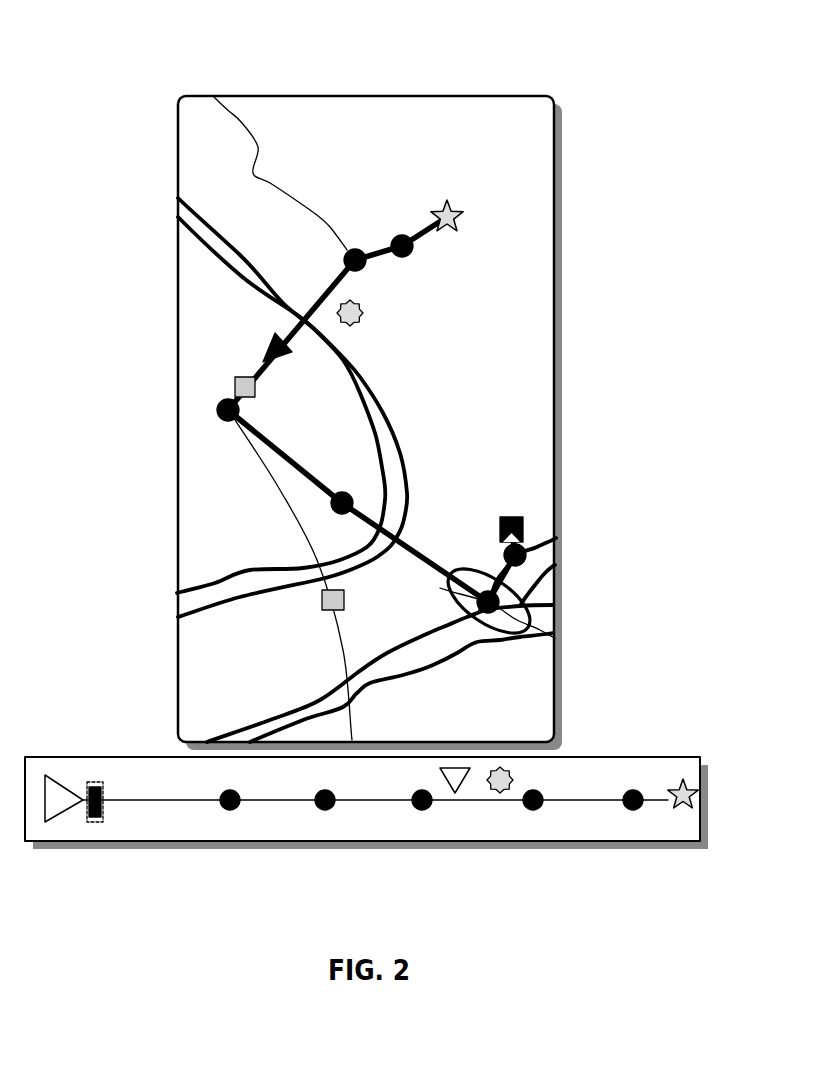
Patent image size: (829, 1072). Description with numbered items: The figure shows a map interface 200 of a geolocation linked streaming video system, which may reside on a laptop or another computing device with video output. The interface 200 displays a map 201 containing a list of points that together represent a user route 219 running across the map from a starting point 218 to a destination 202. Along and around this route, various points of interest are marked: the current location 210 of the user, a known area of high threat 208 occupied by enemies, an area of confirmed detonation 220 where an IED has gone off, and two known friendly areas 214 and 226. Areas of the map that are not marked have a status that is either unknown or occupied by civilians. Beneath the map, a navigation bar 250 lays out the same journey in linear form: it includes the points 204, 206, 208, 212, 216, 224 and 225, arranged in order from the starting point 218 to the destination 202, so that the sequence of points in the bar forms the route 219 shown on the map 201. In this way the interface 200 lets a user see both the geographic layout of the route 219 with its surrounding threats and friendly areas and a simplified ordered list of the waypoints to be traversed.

The map interface 200 is at (588, 88).
The map 201 is at (439, 128).
The destination 202 is at (462, 205).
The point 204 is at (402, 236).
The point 206 is at (346, 258).
The known area of high threat 208 is at (366, 310).
The current location 210 is at (266, 343).
The point 212 is at (227, 400).
The known friendly area 214 is at (255, 390).
The point 216 is at (345, 494).
The starting point 218 is at (508, 517).
The user route 219 is at (414, 547).
The area of confirmed detonation 220 is at (556, 561).
The point 224 is at (462, 603).
The point 225 is at (554, 545).
The known friendly area 226 is at (322, 601).
The navigation bar 250 is at (641, 747).